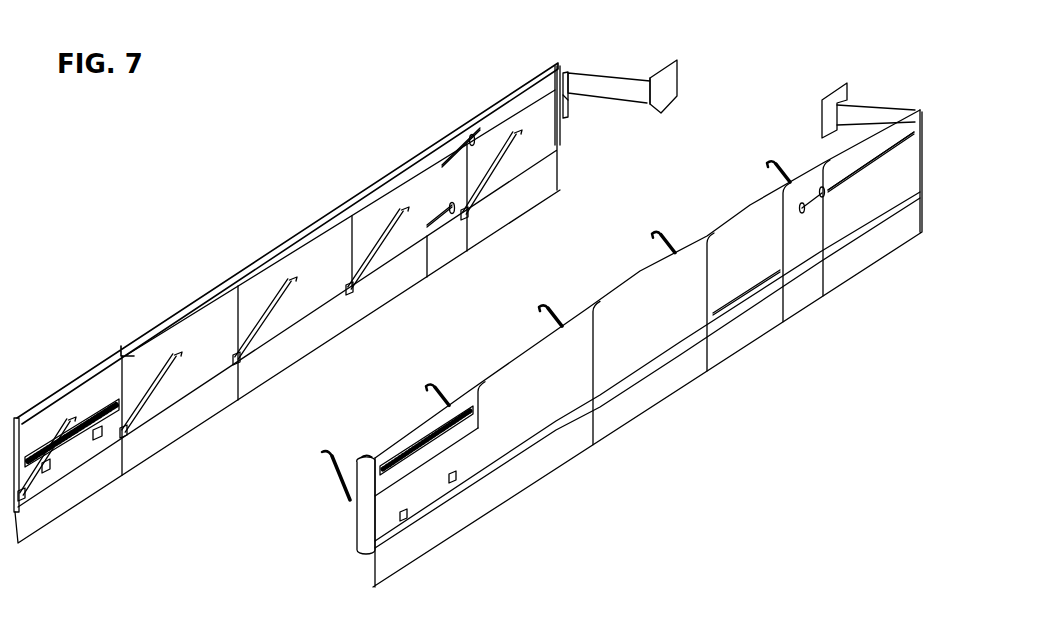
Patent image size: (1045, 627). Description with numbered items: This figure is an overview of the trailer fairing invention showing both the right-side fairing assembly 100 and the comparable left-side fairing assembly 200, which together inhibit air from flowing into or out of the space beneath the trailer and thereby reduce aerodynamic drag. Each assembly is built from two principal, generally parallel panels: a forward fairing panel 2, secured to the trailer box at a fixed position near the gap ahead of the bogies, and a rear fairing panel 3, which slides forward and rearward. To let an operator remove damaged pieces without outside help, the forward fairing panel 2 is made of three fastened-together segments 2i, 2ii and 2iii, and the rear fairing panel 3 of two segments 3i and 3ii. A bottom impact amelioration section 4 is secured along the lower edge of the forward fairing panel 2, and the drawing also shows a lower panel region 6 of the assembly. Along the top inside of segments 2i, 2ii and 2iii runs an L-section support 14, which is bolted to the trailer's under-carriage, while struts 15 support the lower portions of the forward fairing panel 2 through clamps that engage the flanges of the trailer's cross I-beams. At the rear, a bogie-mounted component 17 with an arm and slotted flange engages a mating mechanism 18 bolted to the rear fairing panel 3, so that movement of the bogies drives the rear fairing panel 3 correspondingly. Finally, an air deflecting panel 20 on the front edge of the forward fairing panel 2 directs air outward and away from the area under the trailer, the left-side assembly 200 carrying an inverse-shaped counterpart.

The fairing assembly 100 is at (777, 488).
The fairing assembly 200 is at (193, 182).
The forward fairing panel 2 is at (214, 318).
The segment of front fairing panel 2i is at (156, 354).
The segment of front fairing panel 2ii is at (300, 262).
The segment of front fairing panel 2iii is at (405, 190).
The rear fairing panel 3 is at (552, 147).
The segment of rear fairing panel 3i is at (813, 217).
The segment of rear fairing panel 3ii is at (888, 198).
The bottom impact amelioration section 4 is at (403, 288).
The lower panel with slot and holes 6 is at (80, 453).
The support 14 is at (326, 223).
The strut 15 is at (250, 342).
The component 17 is at (657, 112).
The mating mechanism 18 is at (567, 103).
The air deflecting panel 20 is at (437, 150).